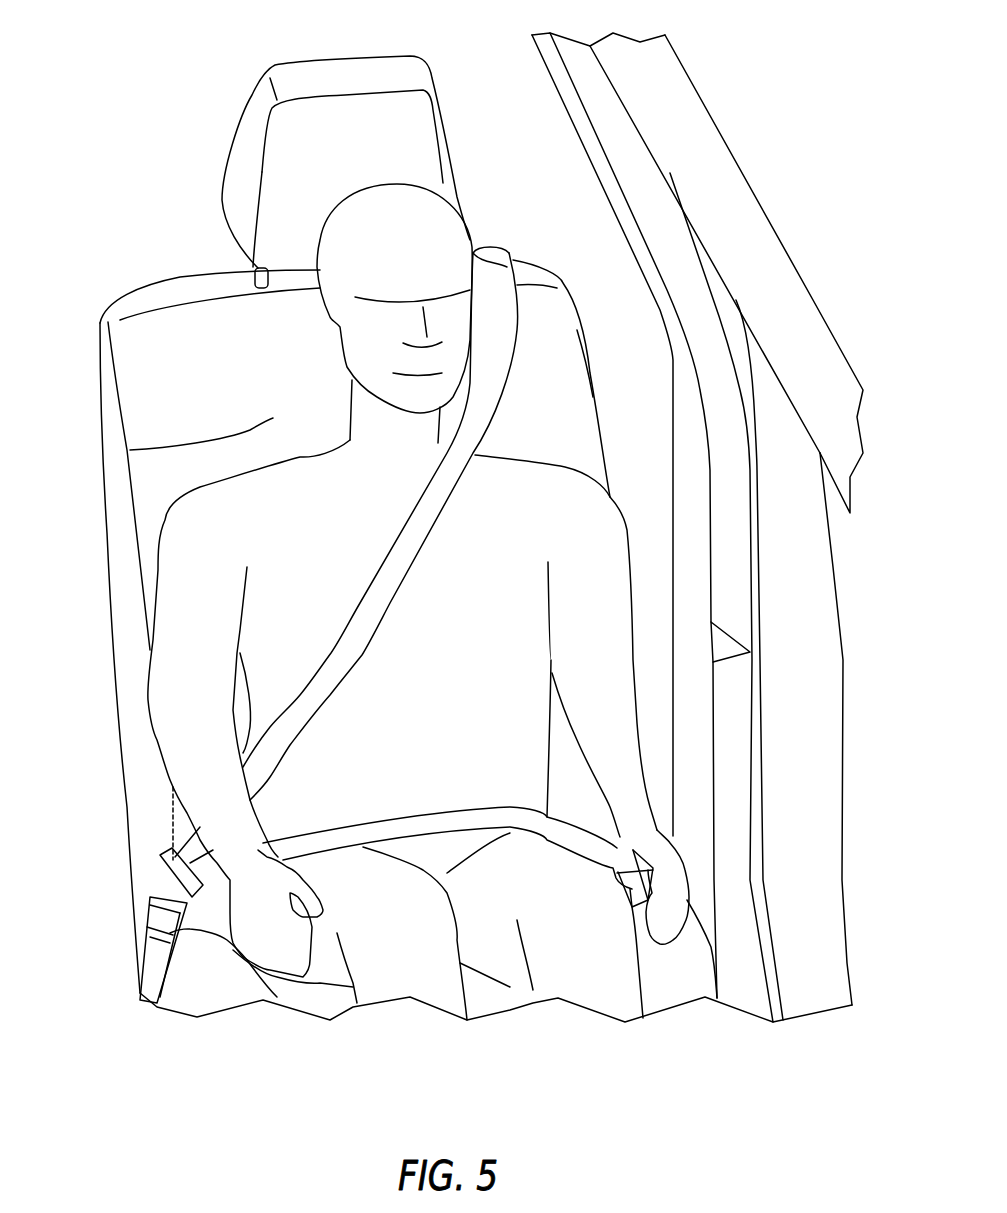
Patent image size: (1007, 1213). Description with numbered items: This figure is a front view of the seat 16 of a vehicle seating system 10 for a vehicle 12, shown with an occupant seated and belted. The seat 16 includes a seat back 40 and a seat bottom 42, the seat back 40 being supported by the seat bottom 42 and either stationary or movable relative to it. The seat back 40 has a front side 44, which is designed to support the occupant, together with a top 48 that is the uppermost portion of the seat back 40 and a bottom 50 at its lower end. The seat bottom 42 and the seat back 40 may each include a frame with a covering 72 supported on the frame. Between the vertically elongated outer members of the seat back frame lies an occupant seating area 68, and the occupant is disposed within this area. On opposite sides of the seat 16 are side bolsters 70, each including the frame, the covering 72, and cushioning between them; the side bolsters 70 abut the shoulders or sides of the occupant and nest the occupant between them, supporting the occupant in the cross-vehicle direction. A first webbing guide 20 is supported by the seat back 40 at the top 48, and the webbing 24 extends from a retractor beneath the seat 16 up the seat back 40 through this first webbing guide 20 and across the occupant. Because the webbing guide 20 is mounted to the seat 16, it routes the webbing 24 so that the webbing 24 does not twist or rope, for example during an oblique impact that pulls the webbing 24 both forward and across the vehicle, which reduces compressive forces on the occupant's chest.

The vehicle seating system 10 is at (482, 196).
The vehicle 12 is at (774, 122).
The seat 16 is at (190, 287).
The first webbing guide 20 is at (500, 247).
The webbing 24 is at (490, 385).
The seat back 40 is at (127, 372).
The seat bottom 42 is at (207, 987).
The front side 44 is at (231, 380).
The top 48 is at (537, 278).
The bottom 50 is at (147, 817).
The occupant seating area 68 is at (130, 449).
The side bolsters 70 is at (590, 360).
The covering 72 is at (135, 408).